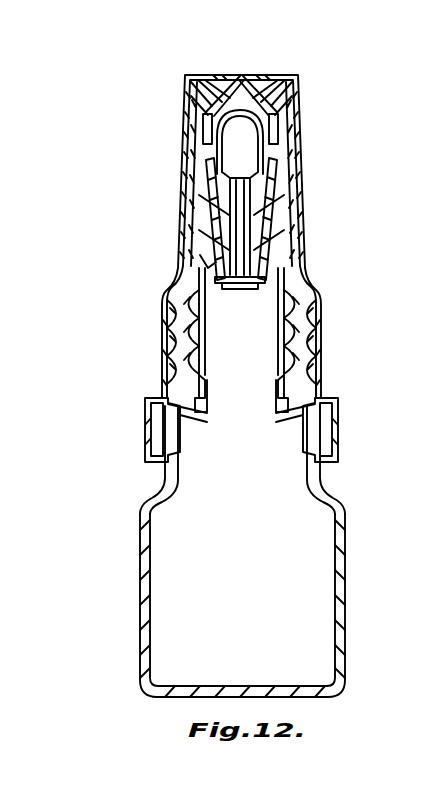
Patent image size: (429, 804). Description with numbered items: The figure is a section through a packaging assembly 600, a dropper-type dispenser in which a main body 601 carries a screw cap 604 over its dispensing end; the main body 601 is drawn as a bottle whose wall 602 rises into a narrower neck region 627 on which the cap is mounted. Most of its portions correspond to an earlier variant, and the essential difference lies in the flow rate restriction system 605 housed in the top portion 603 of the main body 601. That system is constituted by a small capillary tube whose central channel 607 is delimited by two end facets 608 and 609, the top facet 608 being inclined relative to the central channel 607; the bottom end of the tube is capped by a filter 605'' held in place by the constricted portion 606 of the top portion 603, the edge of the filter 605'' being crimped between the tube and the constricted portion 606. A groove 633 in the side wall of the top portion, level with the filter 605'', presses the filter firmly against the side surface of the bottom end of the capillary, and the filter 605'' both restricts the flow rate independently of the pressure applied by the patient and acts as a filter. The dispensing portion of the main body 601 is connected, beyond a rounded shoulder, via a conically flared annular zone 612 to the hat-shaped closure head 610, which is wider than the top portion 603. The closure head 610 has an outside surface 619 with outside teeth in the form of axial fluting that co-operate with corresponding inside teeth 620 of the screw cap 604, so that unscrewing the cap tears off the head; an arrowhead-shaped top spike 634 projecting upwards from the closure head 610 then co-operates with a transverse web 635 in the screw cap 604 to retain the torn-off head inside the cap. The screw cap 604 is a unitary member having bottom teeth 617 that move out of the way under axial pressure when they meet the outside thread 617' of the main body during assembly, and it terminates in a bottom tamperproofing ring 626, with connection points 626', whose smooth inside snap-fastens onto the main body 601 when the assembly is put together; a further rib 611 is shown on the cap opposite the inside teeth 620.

The packaging assembly 600 is at (111, 402).
The main body 601 is at (139, 594).
The container wall 602 is at (141, 555).
The top portion of the main body 603 is at (198, 322).
The screw cap 604 is at (179, 189).
The flow rate restriction system 605 is at (298, 209).
The filter 605'' is at (249, 306).
The constricted portion 606 is at (222, 214).
The central channel 607 is at (252, 212).
The top facet 608 is at (276, 150).
The end facet 609 is at (206, 266).
The closure head 610 is at (296, 82).
The right rib 611 is at (278, 122).
The conically flared annular zone 612 is at (203, 172).
The bottom teeth 617 is at (208, 348).
The neck thread 617' is at (197, 330).
The outside surface with outside teeth 619 is at (192, 146).
The inside teeth 620 is at (204, 102).
The tamperproofing ring 626 is at (150, 419).
The tamper-evident ring (right) 626' is at (342, 404).
The container neck 627 is at (148, 450).
The groove 633 is at (282, 262).
The top spike 634 is at (247, 77).
The transverse web 635 is at (219, 75).